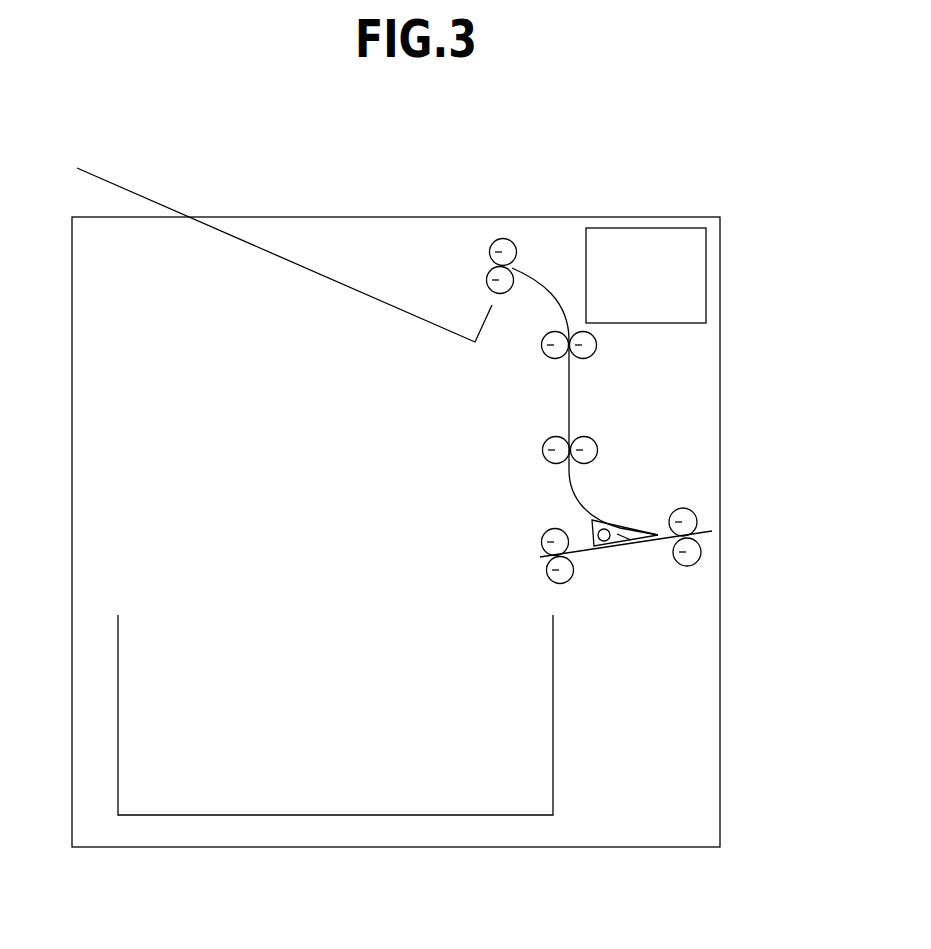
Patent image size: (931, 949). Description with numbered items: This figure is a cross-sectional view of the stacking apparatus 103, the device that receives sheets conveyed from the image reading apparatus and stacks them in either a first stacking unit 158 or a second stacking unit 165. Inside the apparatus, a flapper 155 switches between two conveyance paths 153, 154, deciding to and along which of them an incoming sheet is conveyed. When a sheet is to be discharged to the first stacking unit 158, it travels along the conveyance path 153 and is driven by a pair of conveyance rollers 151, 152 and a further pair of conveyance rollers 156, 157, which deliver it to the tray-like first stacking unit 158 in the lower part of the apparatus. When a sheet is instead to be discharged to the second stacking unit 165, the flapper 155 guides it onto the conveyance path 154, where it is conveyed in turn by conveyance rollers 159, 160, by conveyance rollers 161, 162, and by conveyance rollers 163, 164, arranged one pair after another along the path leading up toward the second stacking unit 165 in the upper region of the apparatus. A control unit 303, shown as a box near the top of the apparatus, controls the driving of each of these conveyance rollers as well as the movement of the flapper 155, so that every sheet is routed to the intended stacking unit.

The stacking apparatus 103 is at (608, 809).
The first stacking unit 158 is at (334, 766).
The control unit 303 is at (645, 248).
The second stacking unit 165 is at (353, 250).
The conveyance path 154 is at (567, 393).
The conveyance roller 163 is at (508, 243).
The conveyance roller 164 is at (488, 278).
The conveyance roller 162 is at (542, 348).
The conveyance roller 161 is at (597, 342).
The conveyance roller 160 is at (547, 450).
The conveyance roller 159 is at (598, 447).
The conveyance roller 151 is at (697, 517).
The conveyance roller 152 is at (701, 552).
The conveyance roller 156 is at (546, 538).
The conveyance roller 157 is at (552, 572).
The conveyance path 153 is at (588, 557).
The flapper 155 is at (635, 547).